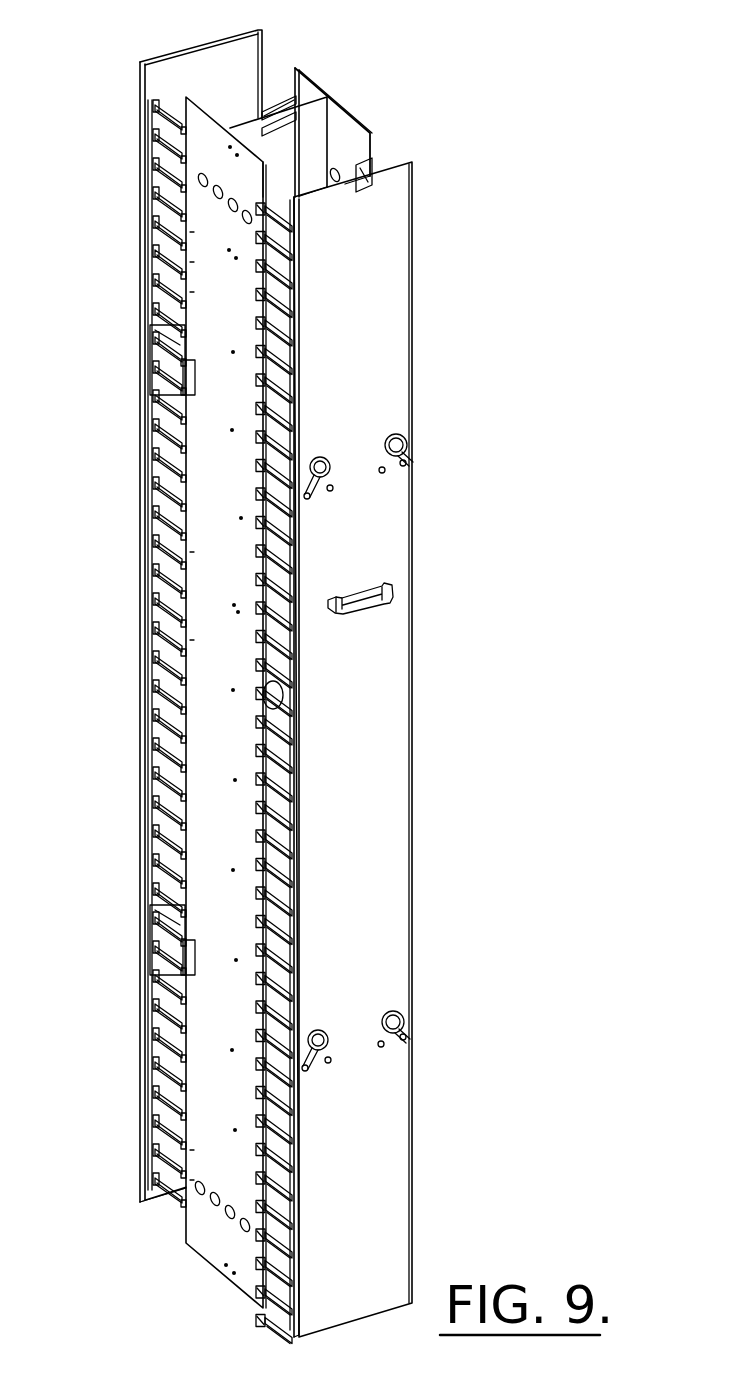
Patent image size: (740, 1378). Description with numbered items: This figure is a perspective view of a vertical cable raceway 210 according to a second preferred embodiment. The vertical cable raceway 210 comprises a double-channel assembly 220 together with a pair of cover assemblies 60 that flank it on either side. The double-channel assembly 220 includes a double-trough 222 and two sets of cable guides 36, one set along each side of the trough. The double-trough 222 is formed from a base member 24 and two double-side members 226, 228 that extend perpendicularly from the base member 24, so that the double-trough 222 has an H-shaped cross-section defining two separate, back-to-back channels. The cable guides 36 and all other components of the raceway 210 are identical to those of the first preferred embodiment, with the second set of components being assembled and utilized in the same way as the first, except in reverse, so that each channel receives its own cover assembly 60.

The cover assembly 60 is at (166, 72).
The cable guides 36 is at (160, 137).
The double-side member 226 is at (220, 213).
The base member 24 is at (262, 133).
The double-side member 228 is at (300, 86).
The double-trough 222 is at (314, 118).
The double-channel assembly 220 is at (351, 118).
The vertical cable raceway 210 is at (157, 1237).